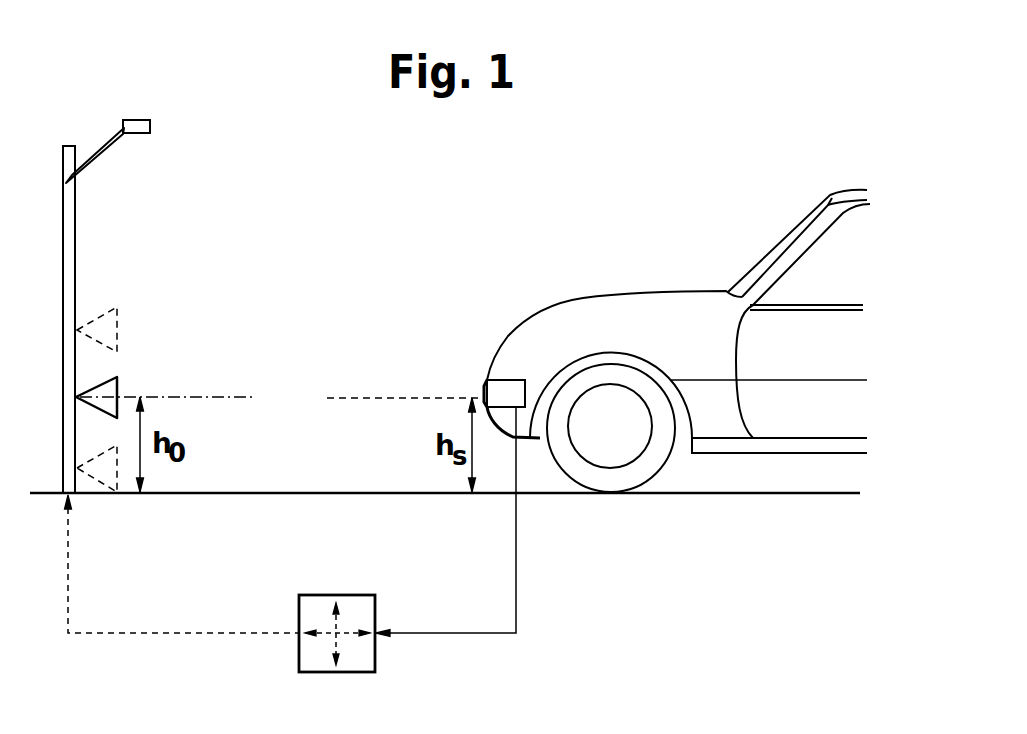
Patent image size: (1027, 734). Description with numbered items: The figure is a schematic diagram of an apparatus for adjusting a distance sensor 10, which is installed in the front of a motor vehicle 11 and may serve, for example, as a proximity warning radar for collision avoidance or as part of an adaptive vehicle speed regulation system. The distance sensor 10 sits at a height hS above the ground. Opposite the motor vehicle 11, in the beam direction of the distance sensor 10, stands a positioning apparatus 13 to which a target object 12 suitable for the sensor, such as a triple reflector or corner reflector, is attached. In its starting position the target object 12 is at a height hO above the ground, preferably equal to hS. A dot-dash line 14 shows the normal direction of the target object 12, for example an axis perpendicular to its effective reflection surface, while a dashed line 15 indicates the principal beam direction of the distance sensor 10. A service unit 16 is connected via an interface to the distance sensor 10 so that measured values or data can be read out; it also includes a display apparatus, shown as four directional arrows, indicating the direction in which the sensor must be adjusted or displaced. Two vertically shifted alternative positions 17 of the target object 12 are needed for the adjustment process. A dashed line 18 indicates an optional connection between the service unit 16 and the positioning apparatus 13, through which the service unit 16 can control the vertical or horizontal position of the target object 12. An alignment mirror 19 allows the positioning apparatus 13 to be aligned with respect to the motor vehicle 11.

The distance sensor 10 is at (510, 385).
The motor vehicle 11 is at (620, 320).
The target object 12 is at (118, 393).
The positioning apparatus 13 is at (68, 263).
The dot-dash line 14 is at (222, 397).
The dashed line 15 is at (360, 398).
The service unit 16 is at (365, 655).
The alternative positions of target object 17 is at (120, 313).
The dashed line 18 is at (194, 630).
The alignment mirror 19 is at (133, 121).